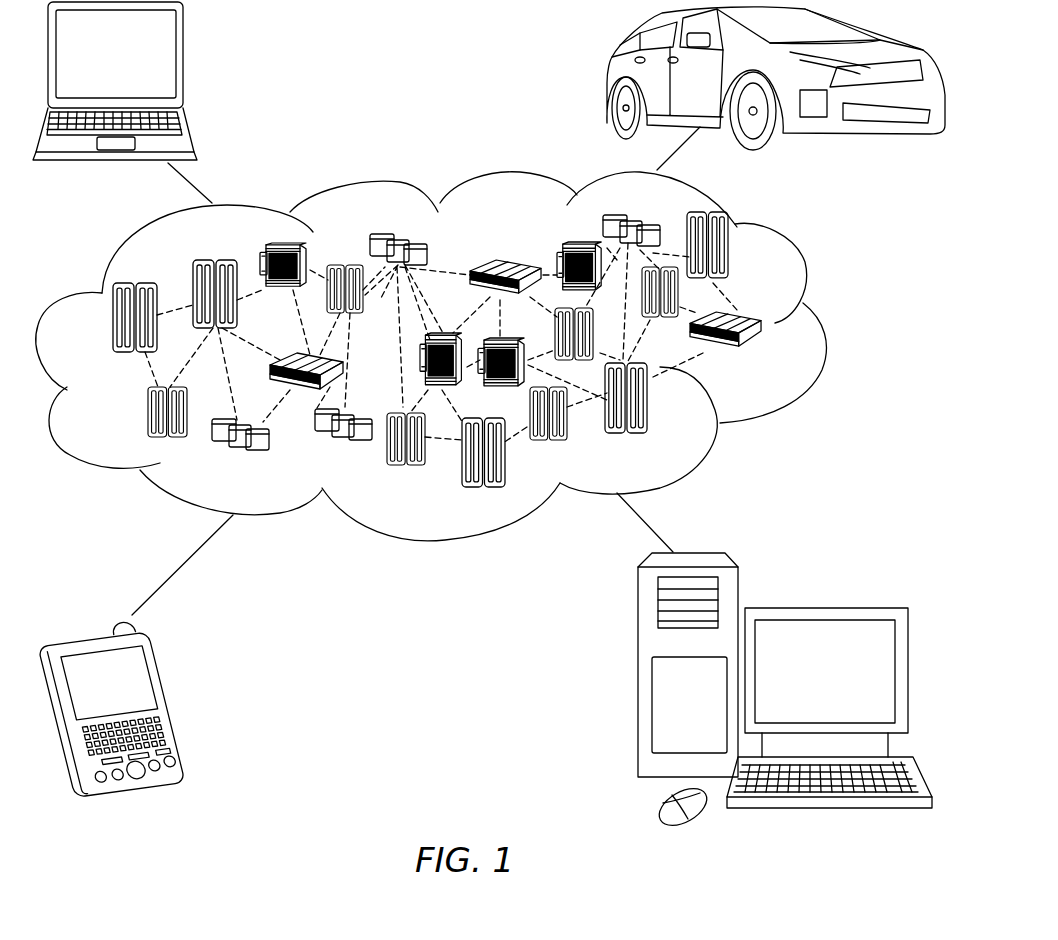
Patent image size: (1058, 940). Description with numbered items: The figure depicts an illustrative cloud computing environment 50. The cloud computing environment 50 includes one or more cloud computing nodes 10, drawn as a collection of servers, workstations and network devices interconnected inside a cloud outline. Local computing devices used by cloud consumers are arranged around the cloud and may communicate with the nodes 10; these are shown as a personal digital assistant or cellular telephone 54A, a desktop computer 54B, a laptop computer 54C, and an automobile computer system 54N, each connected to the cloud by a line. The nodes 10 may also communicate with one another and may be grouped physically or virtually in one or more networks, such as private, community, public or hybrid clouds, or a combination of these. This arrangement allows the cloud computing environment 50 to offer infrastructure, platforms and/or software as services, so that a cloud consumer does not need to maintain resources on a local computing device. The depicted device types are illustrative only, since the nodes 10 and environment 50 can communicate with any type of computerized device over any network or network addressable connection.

The cloud computing nodes 10 is at (764, 356).
The cloud computing environment 50 is at (822, 330).
The personal digital assistant or cellular telephone 54A is at (173, 701).
The desktop computer 54B is at (823, 608).
The laptop computer 54C is at (185, 62).
The automobile computer system 54N is at (610, 80).